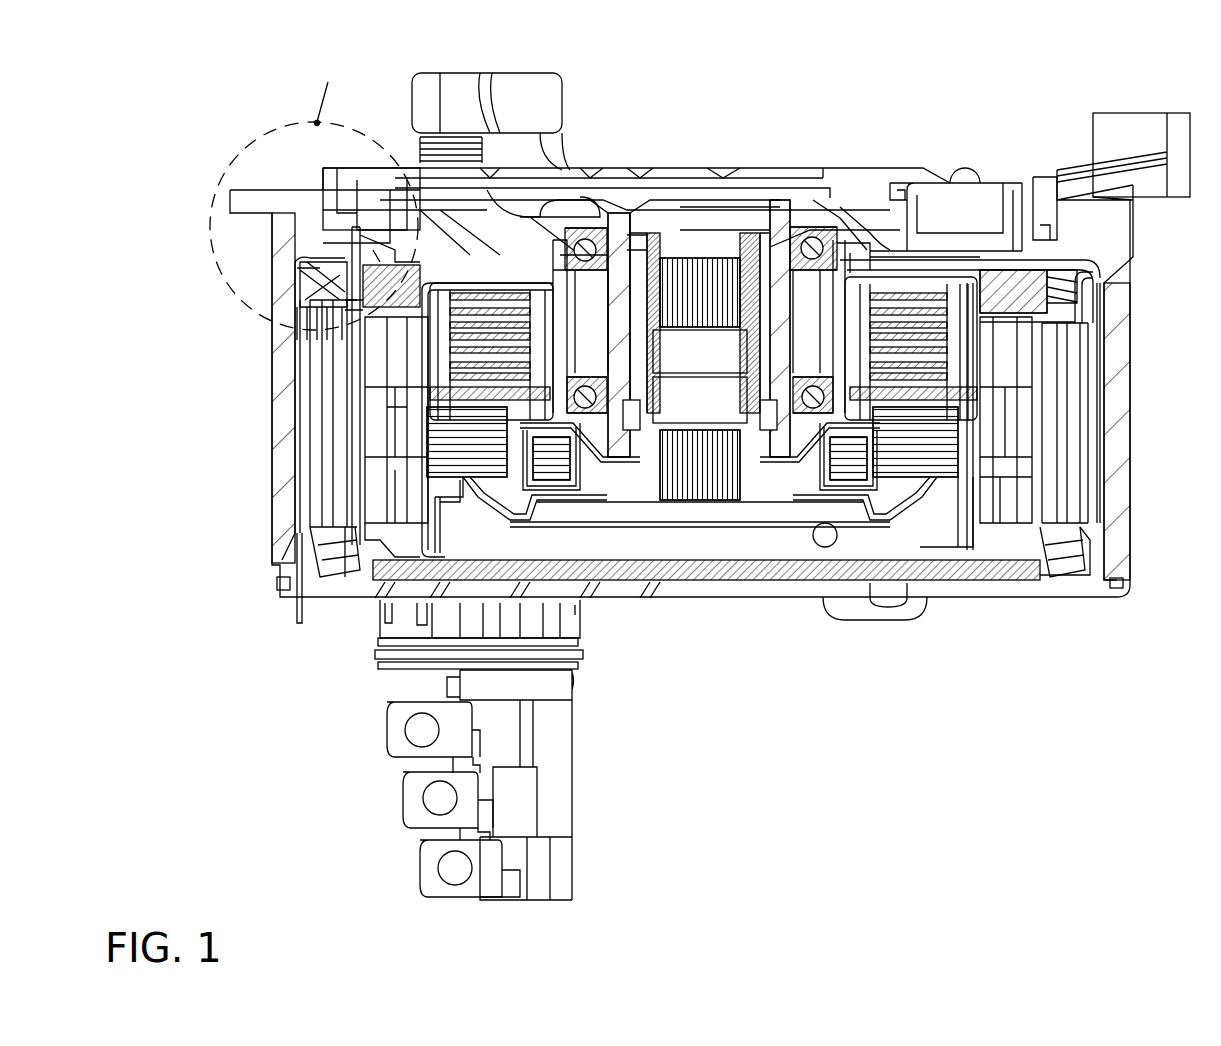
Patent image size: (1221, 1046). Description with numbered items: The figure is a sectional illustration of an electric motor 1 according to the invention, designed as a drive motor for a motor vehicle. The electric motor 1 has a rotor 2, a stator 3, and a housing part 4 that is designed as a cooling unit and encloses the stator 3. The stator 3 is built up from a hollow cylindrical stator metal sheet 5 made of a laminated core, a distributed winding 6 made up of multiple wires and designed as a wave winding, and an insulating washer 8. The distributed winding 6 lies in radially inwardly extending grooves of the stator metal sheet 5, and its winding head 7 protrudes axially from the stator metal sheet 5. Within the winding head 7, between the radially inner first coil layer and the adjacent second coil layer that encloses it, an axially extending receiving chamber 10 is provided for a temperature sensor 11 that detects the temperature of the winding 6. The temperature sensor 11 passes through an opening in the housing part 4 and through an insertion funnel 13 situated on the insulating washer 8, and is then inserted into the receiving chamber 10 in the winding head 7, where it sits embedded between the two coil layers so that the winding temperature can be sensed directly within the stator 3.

The electric motor 1 is at (256, 97).
The rotor 2 is at (1019, 495).
The stator 3 is at (1125, 393).
The housing part 4 is at (1021, 214).
The stator metal sheet 5 is at (1093, 430).
The distributed winding 6 is at (326, 487).
The winding head 7 is at (322, 290).
The insulating washer 8 is at (283, 272).
The receiving chamber 10 is at (351, 304).
The temperature sensor 11 is at (352, 245).
The insertion funnel 13 is at (392, 239).